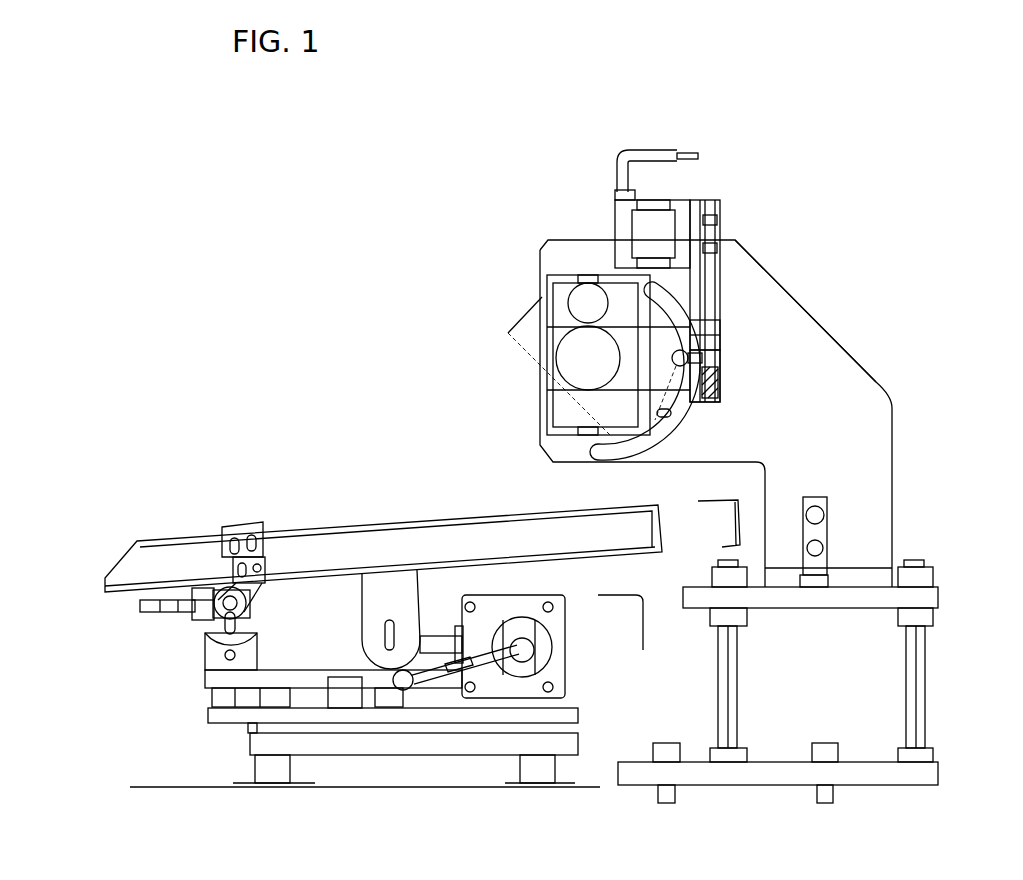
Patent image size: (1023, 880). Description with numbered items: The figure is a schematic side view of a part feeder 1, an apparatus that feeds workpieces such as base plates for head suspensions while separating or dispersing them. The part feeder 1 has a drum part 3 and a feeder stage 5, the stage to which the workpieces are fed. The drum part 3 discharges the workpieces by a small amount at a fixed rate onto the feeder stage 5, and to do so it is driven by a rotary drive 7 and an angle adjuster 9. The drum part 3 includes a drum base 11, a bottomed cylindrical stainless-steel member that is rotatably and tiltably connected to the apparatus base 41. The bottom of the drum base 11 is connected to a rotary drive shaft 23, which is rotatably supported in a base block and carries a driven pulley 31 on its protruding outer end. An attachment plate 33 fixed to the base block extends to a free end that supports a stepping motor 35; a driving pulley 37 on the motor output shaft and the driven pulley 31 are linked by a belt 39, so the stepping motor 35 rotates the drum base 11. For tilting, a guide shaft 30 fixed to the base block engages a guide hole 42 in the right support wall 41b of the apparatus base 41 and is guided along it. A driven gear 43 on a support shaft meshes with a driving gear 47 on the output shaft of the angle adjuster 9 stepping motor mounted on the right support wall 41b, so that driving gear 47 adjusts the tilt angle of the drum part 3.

The part feeder 1 is at (837, 269).
The drum part 3 is at (540, 290).
The feeder stage 5 is at (333, 525).
The rotary drive 7 is at (731, 206).
The angle adjuster 9 is at (574, 359).
The drum base 11 is at (562, 273).
The rotary drive shaft 23 is at (722, 359).
The guide shaft 30 is at (683, 407).
The driven pulley 31 is at (722, 381).
The attachment plate 33 is at (716, 282).
The stepping motor 35 is at (668, 200).
The driving pulley 37 is at (712, 218).
The belt 39 is at (716, 306).
The apparatus base 41 is at (894, 501).
The right support wall 41b is at (796, 299).
The guide hole 42 is at (667, 440).
The driven gear 43 is at (562, 340).
The driving gear 47 is at (565, 305).